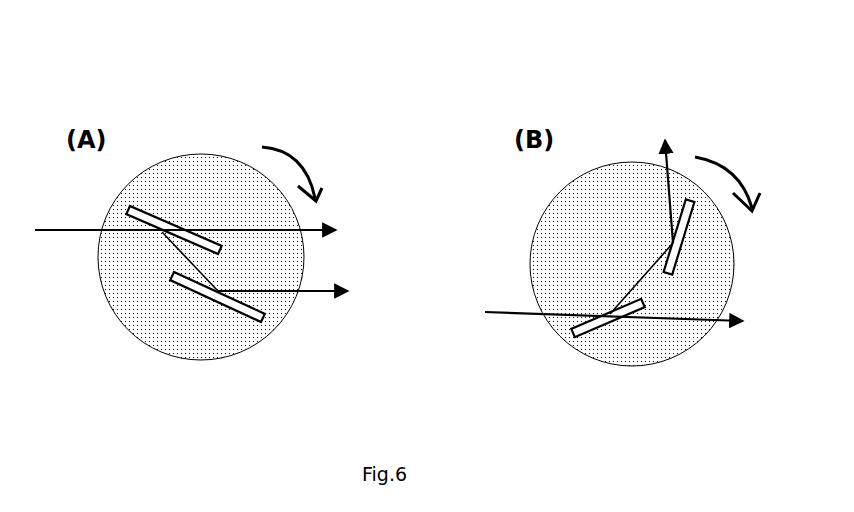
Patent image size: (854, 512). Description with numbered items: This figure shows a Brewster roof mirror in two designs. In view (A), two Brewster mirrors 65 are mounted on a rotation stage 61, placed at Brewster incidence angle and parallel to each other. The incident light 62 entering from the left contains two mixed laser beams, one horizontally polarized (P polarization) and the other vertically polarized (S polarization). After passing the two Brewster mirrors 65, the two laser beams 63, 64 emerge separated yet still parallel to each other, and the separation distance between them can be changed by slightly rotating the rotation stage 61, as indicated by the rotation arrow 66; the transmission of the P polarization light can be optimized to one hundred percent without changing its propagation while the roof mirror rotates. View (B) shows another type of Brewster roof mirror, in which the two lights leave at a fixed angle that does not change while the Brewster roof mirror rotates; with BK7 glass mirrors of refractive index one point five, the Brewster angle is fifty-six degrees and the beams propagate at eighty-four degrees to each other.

The rotation stage 61 is at (214, 146).
The incident light beam 62 is at (75, 242).
The laser beam 63 is at (356, 219).
The laser beam 64 is at (314, 298).
The Brewster mirrors 65 is at (155, 243).
The rotation direction arrow 66 is at (324, 167).